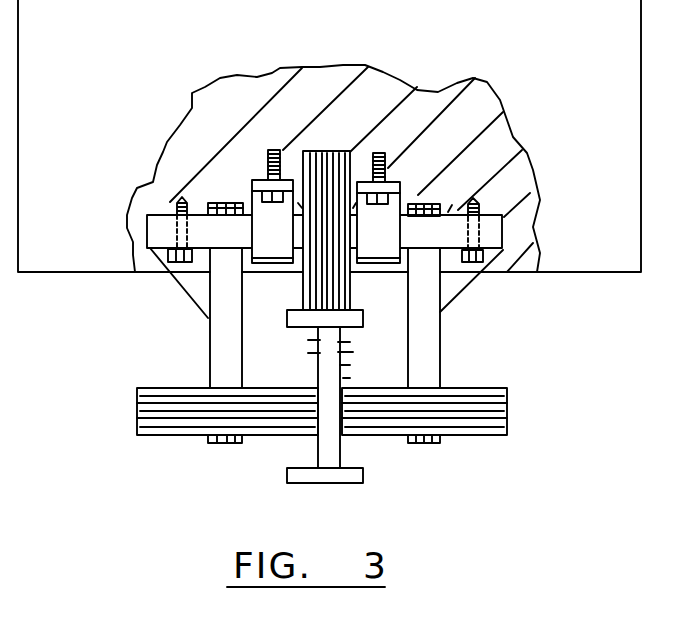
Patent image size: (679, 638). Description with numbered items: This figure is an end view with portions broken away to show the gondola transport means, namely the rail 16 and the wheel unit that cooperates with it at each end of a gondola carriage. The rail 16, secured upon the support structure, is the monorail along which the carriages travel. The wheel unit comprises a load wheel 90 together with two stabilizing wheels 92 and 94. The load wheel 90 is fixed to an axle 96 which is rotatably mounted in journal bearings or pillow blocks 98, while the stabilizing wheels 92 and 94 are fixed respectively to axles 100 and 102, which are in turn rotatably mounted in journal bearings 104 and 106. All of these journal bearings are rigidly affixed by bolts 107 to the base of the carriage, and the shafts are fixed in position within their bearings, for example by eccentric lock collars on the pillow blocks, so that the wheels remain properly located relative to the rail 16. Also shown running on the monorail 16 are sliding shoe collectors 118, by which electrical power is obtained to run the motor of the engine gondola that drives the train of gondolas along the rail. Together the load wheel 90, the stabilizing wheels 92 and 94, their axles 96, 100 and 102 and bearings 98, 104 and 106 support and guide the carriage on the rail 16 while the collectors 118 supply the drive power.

The transport means or rail 16 is at (342, 447).
The load wheel 90 is at (351, 281).
The stabilizing wheel 92 is at (465, 387).
The stabilizing wheel 94 is at (182, 387).
The axle 96 is at (302, 275).
The journal bearings or pillow blocks 98 is at (403, 192).
The axle 100 is at (407, 348).
The axle 102 is at (243, 378).
The journal bearing 104 is at (450, 200).
The journal bearing 106 is at (208, 163).
The bolts 107 is at (480, 201).
The sliding shoe collectors 118 is at (341, 343).